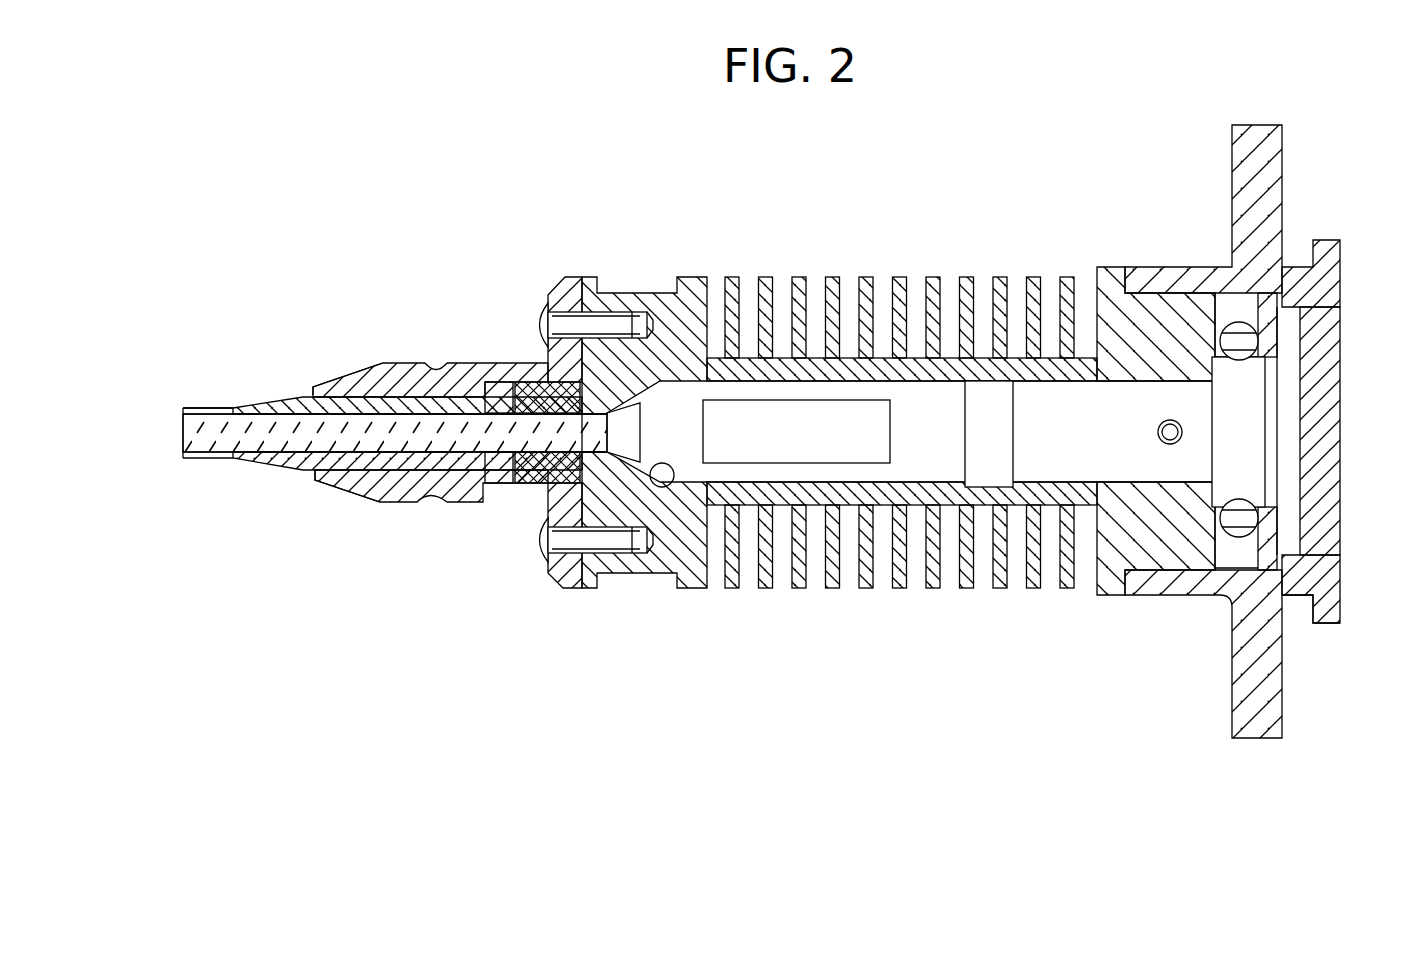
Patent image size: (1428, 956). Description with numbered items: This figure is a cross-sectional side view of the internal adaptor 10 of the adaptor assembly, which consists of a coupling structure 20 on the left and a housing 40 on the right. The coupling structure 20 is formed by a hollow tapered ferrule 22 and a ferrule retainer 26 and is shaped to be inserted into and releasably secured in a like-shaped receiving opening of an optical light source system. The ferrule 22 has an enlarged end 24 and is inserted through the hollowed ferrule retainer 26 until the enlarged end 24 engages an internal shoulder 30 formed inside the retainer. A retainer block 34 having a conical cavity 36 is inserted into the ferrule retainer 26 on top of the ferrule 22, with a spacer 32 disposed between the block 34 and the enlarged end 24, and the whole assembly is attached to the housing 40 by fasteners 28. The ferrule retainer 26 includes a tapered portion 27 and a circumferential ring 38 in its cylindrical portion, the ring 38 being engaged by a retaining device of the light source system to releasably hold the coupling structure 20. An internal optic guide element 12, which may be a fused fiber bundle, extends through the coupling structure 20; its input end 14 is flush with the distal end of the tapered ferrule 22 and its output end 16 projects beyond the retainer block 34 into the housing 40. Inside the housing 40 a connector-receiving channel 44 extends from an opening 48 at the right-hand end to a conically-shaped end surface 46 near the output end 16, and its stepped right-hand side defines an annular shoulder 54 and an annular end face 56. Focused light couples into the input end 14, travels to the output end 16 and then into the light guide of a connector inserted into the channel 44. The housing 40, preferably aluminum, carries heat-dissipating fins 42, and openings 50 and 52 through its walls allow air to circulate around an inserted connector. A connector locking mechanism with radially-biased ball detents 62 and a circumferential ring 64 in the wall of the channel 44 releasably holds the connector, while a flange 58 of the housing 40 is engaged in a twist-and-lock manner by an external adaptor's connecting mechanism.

The internal adaptor 10 is at (651, 208).
The internal optic guide element 12 is at (230, 447).
The input end 14 is at (178, 420).
The output end 16 is at (613, 413).
The coupling structure 20 is at (308, 383).
The tapered ferrule 22 is at (277, 467).
The enlarged end 24 is at (495, 380).
The ferrule retainer 26 is at (358, 380).
The tapered portion 27 is at (343, 490).
The fasteners 28 is at (537, 297).
The internal shoulder 30 is at (497, 483).
The spacer 32 is at (520, 385).
The retainer block 34 is at (537, 503).
The conical cavity 36 is at (517, 483).
The circumferential ring 38 is at (417, 500).
The housing 40 is at (1115, 243).
The fins 42 is at (1033, 280).
The connector-receiving channel 44 is at (1078, 455).
The conically-shaped end surface 46 is at (667, 470).
The opening 48 is at (1287, 413).
The opening 50 is at (625, 440).
The opening 52 is at (780, 420).
The annular shoulder 54 is at (1213, 490).
The annular end face 56 is at (1280, 532).
The flange 58 is at (1333, 602).
The radially-biased ball detents 62 is at (1242, 338).
The circumferential ring 64 is at (988, 490).